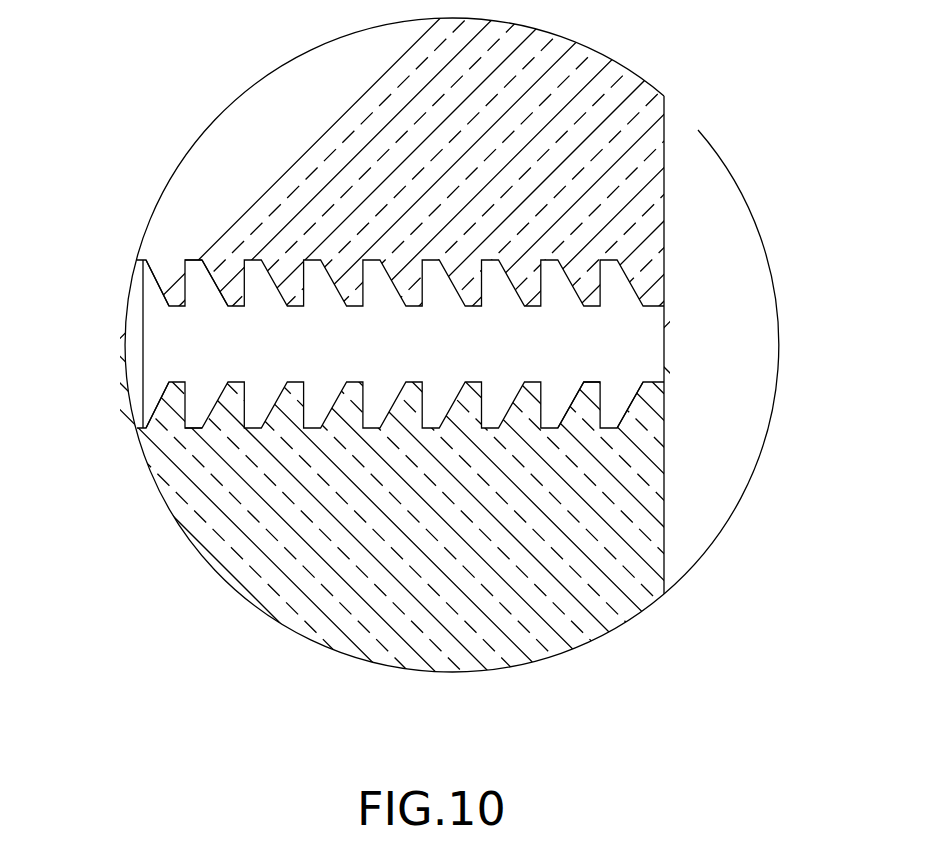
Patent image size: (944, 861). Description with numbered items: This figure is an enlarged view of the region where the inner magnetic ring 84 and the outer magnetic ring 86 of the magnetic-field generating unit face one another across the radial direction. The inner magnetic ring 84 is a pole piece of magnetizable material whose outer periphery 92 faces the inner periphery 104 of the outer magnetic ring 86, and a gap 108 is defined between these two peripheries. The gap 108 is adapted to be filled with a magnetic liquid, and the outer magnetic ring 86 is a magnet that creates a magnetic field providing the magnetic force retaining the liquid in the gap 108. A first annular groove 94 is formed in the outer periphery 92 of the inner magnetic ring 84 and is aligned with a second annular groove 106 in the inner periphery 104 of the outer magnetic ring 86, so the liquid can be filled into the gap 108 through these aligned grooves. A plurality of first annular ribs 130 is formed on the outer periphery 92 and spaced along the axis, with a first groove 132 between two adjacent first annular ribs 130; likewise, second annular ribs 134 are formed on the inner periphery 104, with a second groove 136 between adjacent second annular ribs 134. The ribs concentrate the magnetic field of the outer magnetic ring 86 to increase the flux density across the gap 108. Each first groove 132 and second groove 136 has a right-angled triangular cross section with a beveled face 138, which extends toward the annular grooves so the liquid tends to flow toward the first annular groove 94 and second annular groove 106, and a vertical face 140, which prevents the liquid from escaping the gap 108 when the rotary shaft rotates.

The inner magnetic ring 84 is at (623, 582).
The outer magnetic ring 86 is at (587, 93).
The outer periphery 92 is at (238, 392).
The first annular groove 94 is at (777, 417).
The inner periphery 104 is at (215, 282).
The second annular groove 106 is at (688, 152).
The gap 108 is at (157, 360).
The first annular ribs 130 is at (182, 383).
The first groove 132 is at (198, 428).
The second annular ribs 134 is at (185, 292).
The second groove 136 is at (193, 270).
The beveled face 138 is at (630, 408).
The vertical face 140 is at (598, 406).